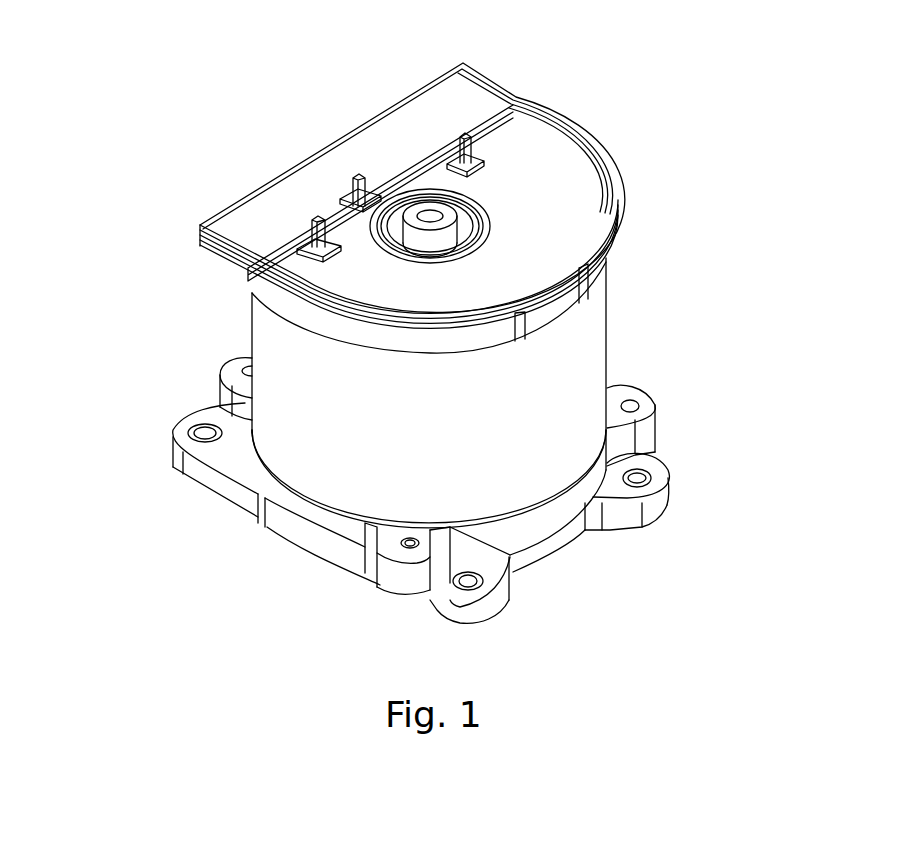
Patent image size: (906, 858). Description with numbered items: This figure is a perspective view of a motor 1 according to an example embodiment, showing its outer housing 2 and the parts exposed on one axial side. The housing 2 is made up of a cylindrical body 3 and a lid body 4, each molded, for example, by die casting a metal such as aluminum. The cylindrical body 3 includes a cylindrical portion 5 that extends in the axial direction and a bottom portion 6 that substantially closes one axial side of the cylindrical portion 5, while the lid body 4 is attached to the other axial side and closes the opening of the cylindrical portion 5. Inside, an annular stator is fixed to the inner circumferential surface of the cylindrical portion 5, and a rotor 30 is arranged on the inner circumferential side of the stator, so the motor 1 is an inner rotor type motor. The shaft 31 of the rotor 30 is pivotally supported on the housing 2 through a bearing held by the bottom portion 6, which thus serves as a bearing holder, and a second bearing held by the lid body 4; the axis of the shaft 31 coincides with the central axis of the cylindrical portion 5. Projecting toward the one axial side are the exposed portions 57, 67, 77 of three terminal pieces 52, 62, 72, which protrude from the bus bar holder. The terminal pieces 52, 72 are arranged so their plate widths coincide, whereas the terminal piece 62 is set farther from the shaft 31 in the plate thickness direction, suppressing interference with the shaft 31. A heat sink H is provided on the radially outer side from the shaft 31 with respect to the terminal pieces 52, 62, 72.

The motor 1 is at (408, 330).
The housing 2 is at (408, 343).
The cylindrical body 3 is at (408, 295).
The lid body 4 is at (464, 491).
The cylindrical portion 5 is at (518, 393).
The bottom portion 6 is at (400, 208).
The rotor 30 is at (569, 195).
The shaft 31 is at (569, 195).
The terminal piece 52 is at (195, 257).
The exposed portion 57 is at (195, 257).
The terminal piece 62 is at (215, 212).
The exposed portion 67 is at (215, 212).
The terminal piece 72 is at (258, 160).
The exposed portion 77 is at (258, 160).
The heat sink H is at (362, 105).